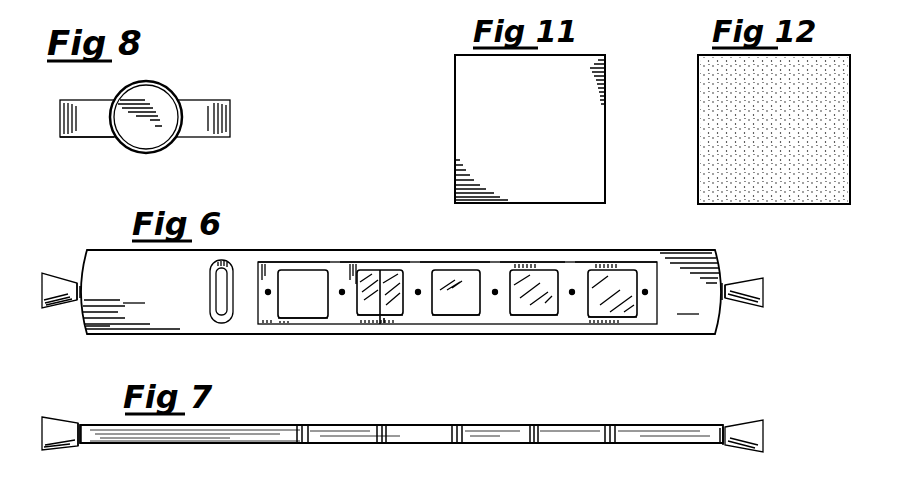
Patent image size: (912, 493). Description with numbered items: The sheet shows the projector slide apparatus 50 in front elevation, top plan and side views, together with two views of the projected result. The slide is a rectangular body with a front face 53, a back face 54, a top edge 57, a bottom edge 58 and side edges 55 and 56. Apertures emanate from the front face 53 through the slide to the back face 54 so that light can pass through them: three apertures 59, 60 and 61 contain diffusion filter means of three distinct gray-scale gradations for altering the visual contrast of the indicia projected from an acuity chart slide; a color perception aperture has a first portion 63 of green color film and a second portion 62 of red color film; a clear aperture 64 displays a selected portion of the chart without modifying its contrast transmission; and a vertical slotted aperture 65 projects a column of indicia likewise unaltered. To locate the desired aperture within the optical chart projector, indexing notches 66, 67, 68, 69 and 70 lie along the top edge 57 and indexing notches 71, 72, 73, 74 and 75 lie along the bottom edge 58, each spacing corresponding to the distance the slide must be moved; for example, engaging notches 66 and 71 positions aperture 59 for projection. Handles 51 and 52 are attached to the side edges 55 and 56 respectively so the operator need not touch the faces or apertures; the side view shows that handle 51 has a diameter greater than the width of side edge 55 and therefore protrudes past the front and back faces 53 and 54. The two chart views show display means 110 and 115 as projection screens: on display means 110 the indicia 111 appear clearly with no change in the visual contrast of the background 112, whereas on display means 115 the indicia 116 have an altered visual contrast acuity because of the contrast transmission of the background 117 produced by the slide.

In FIG. 8, the projector slide apparatus 50 is at (167, 117).
In FIG. 6, the projector slide apparatus 50 is at (712, 246).
In FIG. 7, the projector slide apparatus 50 is at (720, 405).
In FIG. 8, the handle 51 is at (164, 88).
In FIG. 6, the handle 51 is at (765, 291).
In FIG. 7, the handle 51 is at (740, 421).
In FIG. 6, the handle 52 is at (58, 276).
In FIG. 7, the handle 52 is at (72, 424).
In FIG. 8, the front face 53 is at (94, 100).
In FIG. 6, the front face 53 is at (401, 291).
In FIG. 7, the front face 53 is at (655, 425).
In FIG. 8, the back face 54 is at (73, 138).
In FIG. 7, the back face 54 is at (652, 445).
In FIG. 8, the side edge 55 is at (230, 118).
In FIG. 6, the side edge 55 is at (723, 270).
In FIG. 7, the side edge 55 is at (722, 444).
In FIG. 6, the side edge 56 is at (78, 318).
In FIG. 7, the side edge 56 is at (80, 446).
In FIG. 6, the top edge 57 is at (101, 250).
In FIG. 6, the bottom edge 58 is at (155, 336).
In FIG. 7, the bottom edge 58 is at (242, 440).
In FIG. 6, the aperture 59 is at (625, 316).
In FIG. 6, the aperture 60 is at (545, 314).
In FIG. 6, the aperture 61 is at (468, 314).
In FIG. 6, the second portion of color perception aperture 62 is at (394, 316).
In FIG. 6, the first portion of color perception aperture 63 is at (372, 312).
In FIG. 6, the clear aperture 64 is at (300, 310).
In FIG. 6, the vertical slotted aperture 65 is at (222, 324).
In FIG. 6, the indexing notch 66 is at (605, 257).
In FIG. 6, the indexing notch 67 is at (535, 257).
In FIG. 6, the indexing notch 68 is at (457, 257).
In FIG. 6, the indexing notch 69 is at (379, 257).
In FIG. 6, the indexing notch 70 is at (300, 257).
In FIG. 6, the indexing notch 71 is at (605, 336).
In FIG. 7, the indexing notch 71 is at (611, 444).
In FIG. 6, the indexing notch 72 is at (528, 336).
In FIG. 7, the indexing notch 72 is at (535, 444).
In FIG. 6, the indexing notch 73 is at (450, 336).
In FIG. 7, the indexing notch 73 is at (456, 444).
In FIG. 6, the indexing notch 74 is at (380, 336).
In FIG. 7, the indexing notch 74 is at (381, 444).
In FIG. 6, the indexing notch 75 is at (305, 335).
In FIG. 7, the indexing notch 75 is at (302, 444).
In FIG. 11, the display means 110 is at (499, 126).
In FIG. 11, the indicia 111 is at (476, 84).
In FIG. 11, the background 112 is at (465, 130).
In FIG. 12, the display means 115 is at (748, 127).
In FIG. 12, the indicia 116 is at (719, 86).
In FIG. 12, the background 117 is at (712, 134).